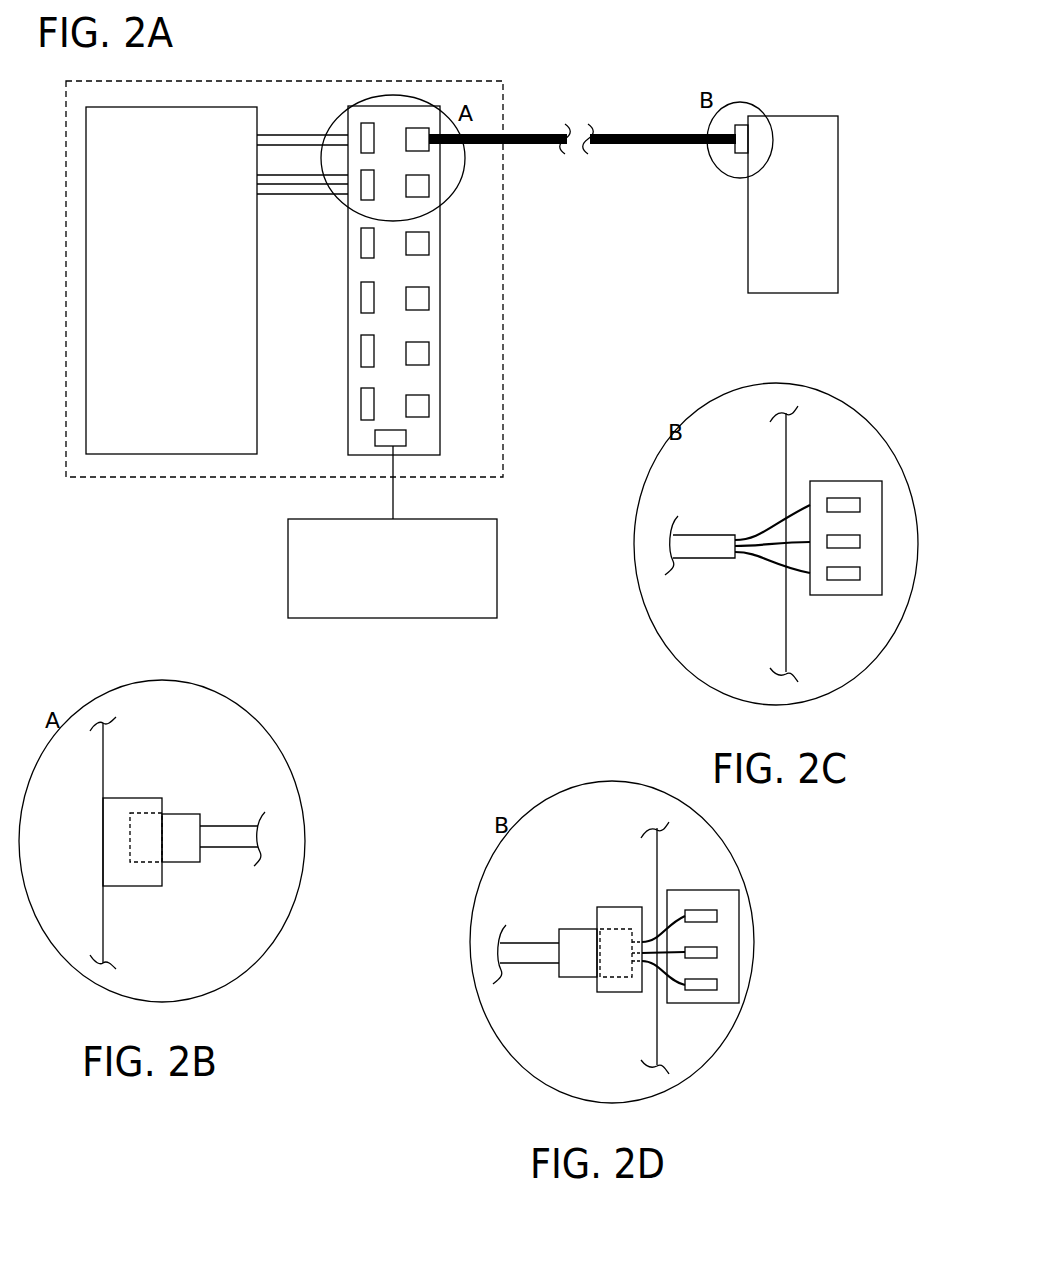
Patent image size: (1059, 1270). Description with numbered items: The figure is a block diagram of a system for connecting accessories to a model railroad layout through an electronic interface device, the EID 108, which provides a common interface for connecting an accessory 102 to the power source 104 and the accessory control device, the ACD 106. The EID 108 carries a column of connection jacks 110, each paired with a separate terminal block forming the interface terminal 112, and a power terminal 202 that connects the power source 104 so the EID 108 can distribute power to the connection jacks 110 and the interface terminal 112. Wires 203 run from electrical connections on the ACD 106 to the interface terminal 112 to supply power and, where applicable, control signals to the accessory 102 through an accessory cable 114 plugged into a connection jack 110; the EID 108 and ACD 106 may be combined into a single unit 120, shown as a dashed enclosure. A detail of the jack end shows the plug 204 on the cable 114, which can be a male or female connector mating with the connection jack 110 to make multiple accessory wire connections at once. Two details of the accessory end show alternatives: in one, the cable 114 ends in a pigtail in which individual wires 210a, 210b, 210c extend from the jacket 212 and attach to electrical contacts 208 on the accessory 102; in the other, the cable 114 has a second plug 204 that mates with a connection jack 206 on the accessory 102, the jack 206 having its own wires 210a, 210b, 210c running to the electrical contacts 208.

In FIG. 2A, the accessory 102 is at (786, 204).
In FIG. 2C, the accessory 102 is at (815, 542).
In FIG. 2D, the accessory 102 is at (684, 946).
In FIG. 2A, the power source 104 is at (392, 568).
In FIG. 2A, the ACD 106 is at (171, 280).
In FIG. 2B, the EID 108 is at (81, 843).
In FIG. 2A, the connection jack 110 is at (420, 132).
In FIG. 2B, the connection jack 110 is at (137, 798).
In FIG. 2A, the interface terminal 112 is at (367, 123).
In FIG. 2A, the accessory cable 114 is at (539, 133).
In FIG. 2B, the accessory cable 114 is at (230, 847).
In FIG. 2C, the accessory cable 114 is at (700, 523).
In FIG. 2D, the accessory cable 114 is at (519, 965).
In FIG. 2A, the single unit 120 is at (170, 477).
In FIG. 2A, the power terminal 202 is at (400, 438).
In FIG. 2A, the wires 203 is at (300, 120).
In FIG. 2B, the plug 204 is at (185, 814).
In FIG. 2D, the plug 204 is at (572, 929).
In FIG. 2D, the connection jack 206 is at (600, 907).
In FIG. 2C, the electrical contacts 208 is at (863, 481).
In FIG. 2D, the electrical contacts 208 is at (739, 942).
In FIG. 2C, the wire 210a is at (775, 529).
In FIG. 2D, the wire 210a is at (656, 912).
In FIG. 2C, the wire 210b is at (796, 570).
In FIG. 2D, the wire 210b is at (676, 985).
In FIG. 2C, the wire 210c is at (748, 555).
In FIG. 2D, the wire 210c is at (650, 964).
In FIG. 2C, the jacket 212 is at (712, 553).